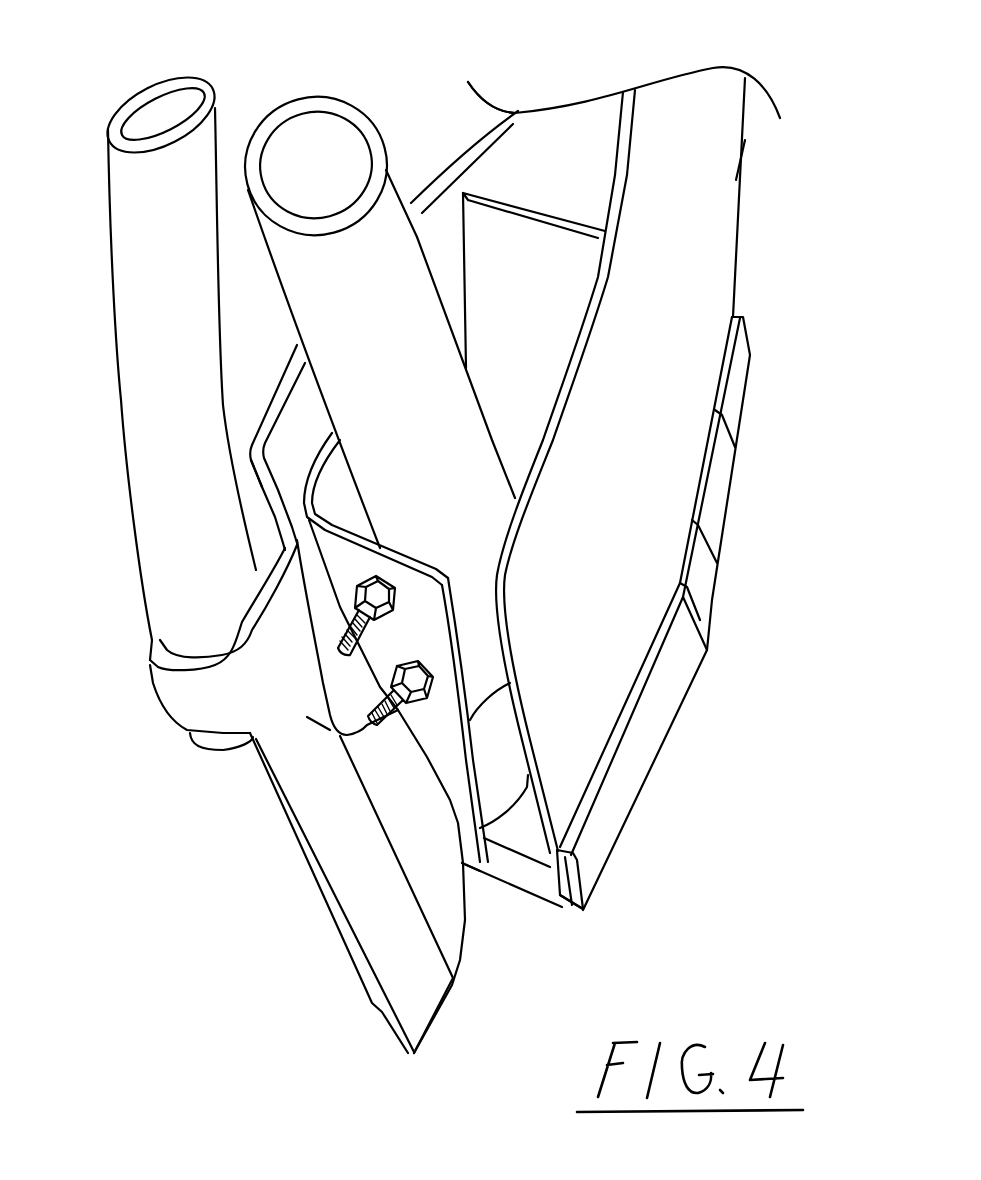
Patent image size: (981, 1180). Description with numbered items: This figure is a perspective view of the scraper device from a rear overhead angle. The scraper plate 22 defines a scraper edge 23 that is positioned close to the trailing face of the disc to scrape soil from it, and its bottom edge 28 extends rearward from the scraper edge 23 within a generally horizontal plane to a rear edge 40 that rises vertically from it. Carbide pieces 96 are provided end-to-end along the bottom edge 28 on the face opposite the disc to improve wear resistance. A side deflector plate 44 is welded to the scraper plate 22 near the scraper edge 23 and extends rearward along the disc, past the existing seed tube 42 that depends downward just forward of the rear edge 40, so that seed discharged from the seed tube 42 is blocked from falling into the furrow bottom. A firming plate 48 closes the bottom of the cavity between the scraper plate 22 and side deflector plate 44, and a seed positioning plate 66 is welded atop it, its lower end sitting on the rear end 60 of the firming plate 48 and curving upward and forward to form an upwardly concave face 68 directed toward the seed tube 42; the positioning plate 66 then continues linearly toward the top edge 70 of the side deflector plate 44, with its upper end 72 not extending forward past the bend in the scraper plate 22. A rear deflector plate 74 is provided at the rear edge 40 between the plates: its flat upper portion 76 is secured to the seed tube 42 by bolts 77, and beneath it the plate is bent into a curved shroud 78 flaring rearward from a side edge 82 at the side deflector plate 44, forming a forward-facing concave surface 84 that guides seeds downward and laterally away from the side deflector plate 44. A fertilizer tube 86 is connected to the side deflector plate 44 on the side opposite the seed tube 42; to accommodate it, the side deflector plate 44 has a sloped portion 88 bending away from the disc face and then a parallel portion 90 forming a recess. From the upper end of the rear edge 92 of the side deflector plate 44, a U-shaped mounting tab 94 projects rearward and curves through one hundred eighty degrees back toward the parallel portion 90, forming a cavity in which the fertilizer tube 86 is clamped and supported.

The scraper plate 22 is at (695, 195).
The scraper edge 23 is at (744, 160).
The bottom edge 28 is at (560, 912).
The rear edge 40 is at (548, 852).
The seed tube 42 is at (387, 195).
The side deflector plate 44 is at (499, 172).
The firming plate 48 is at (503, 867).
The rear end 60 is at (537, 875).
The seed positioning plate 66 is at (513, 292).
The upwardly concave face 68 is at (508, 776).
The top edge 70 is at (288, 383).
The upper end 72 is at (537, 214).
The rear deflector plate 74 is at (409, 600).
The flat upper portion 76 is at (425, 620).
The bolts 77 is at (313, 703).
The curved shroud 78 is at (458, 827).
The side edge 82 is at (340, 603).
The concave surface 84 is at (505, 765).
The fertilizer tube 86 is at (157, 450).
The sloped portion 88 is at (265, 487).
The parallel portion 90 is at (242, 617).
The rear edge 92 is at (300, 856).
The U-shaped mounting tab 94 is at (175, 657).
The carbide pieces 96 is at (713, 497).